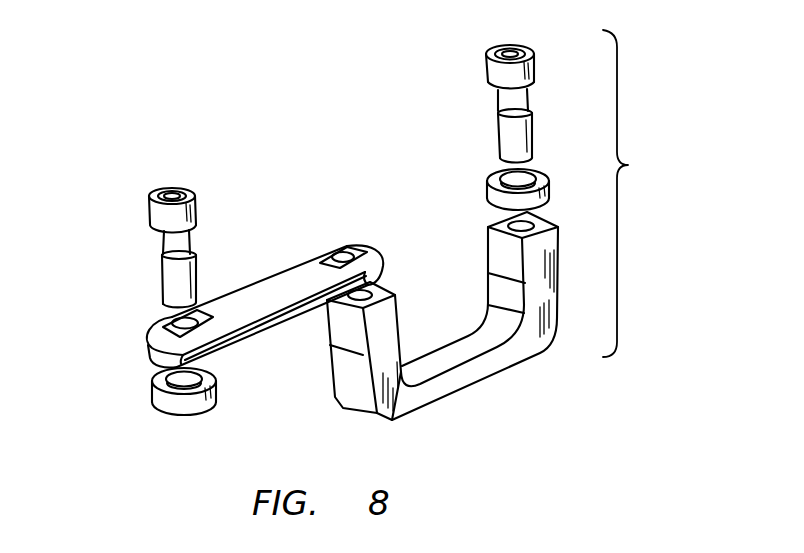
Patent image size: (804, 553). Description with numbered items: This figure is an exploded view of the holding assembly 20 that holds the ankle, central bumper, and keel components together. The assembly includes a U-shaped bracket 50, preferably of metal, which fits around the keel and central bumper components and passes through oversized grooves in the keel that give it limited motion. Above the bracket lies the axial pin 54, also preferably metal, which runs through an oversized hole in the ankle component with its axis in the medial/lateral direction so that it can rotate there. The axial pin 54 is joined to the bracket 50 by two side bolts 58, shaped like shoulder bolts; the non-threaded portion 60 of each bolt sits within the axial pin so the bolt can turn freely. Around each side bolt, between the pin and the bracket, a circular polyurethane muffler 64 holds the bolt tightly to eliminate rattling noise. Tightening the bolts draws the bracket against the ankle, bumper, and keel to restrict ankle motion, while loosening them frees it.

The mounting assembly 20 is at (634, 193).
The U-shaped bracket 50 is at (532, 347).
The axial pin 54 is at (282, 280).
The side bolts 58 is at (173, 278).
The non-threaded portion 60 is at (173, 243).
The muffler 64 is at (158, 392).